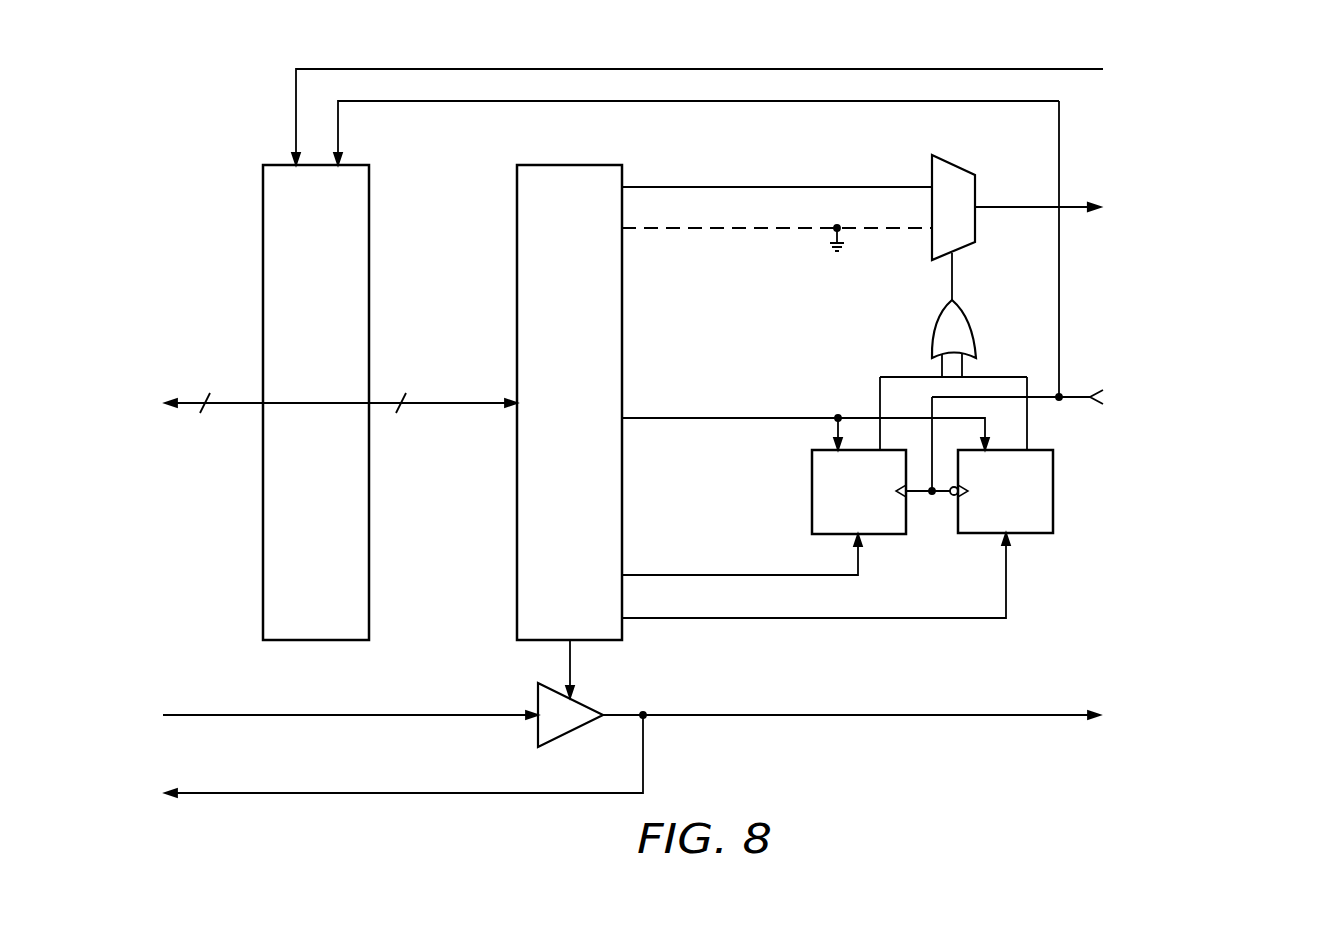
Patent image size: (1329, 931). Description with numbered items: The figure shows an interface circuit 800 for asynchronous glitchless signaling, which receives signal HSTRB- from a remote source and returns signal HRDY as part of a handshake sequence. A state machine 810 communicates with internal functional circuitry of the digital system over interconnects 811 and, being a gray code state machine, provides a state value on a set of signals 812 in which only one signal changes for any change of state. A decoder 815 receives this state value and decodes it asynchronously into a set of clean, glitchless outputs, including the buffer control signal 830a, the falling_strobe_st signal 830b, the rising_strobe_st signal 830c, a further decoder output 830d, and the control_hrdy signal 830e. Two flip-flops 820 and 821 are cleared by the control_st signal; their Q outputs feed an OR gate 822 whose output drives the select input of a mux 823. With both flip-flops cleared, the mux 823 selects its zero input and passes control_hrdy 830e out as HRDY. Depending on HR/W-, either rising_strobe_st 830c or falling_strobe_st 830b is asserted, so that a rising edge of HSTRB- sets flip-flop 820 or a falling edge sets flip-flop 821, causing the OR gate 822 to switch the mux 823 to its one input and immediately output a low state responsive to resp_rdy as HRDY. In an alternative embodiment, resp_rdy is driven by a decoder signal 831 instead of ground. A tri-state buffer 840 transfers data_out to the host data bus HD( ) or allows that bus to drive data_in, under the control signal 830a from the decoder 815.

The interface circuit 800 is at (158, 183).
The state machine 810 is at (335, 443).
The interconnects 811 is at (235, 408).
The set of signals 812 is at (457, 405).
The decoder 815 is at (588, 433).
The flip-flop 820 is at (811, 493).
The flip-flop 821 is at (1054, 492).
The OR gate 822 is at (977, 323).
The mux 823 is at (950, 163).
The control signal 830a is at (573, 660).
The falling_strobe_st signal 830b is at (812, 621).
The rising_strobe_st signal 830c is at (860, 560).
The decoder output signal 830d is at (690, 421).
The control_hrdy signal 830e is at (836, 186).
The signal from decoder 831 is at (768, 232).
The tri-state buffer 840 is at (573, 734).